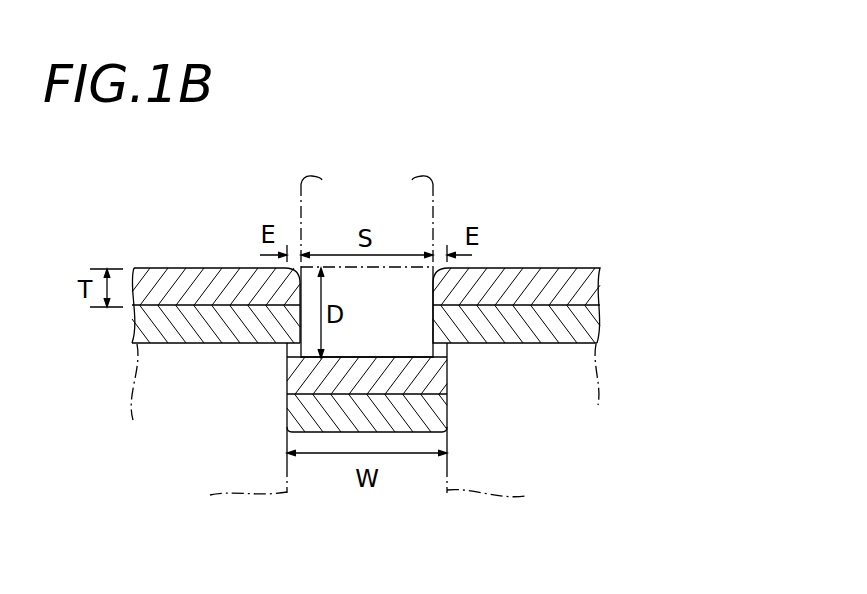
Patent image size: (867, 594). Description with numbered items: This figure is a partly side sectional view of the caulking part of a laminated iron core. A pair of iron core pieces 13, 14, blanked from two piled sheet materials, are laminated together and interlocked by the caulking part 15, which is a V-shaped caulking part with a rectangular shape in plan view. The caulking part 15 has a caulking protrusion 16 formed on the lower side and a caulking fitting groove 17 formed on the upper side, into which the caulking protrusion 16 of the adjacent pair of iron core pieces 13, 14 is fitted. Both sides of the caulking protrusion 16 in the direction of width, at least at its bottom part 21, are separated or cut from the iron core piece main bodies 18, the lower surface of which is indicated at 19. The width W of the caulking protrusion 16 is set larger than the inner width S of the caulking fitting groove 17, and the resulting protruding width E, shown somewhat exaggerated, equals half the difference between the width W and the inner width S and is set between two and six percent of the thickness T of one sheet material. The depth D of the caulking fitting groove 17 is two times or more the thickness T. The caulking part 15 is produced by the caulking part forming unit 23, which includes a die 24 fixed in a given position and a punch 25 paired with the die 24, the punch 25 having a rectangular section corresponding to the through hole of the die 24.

The iron core piece 13 is at (579, 258).
The iron core piece 14 is at (570, 358).
The caulking part 15 is at (382, 304).
The caulking protrusion 16 is at (455, 438).
The caulking fitting groove 17 is at (387, 345).
The iron core piece main body 18 is at (202, 253).
The lower surface of plate 19 is at (190, 345).
The bottom part 21 is at (287, 438).
The caulking part forming unit 23 is at (398, 168).
The die 24 is at (185, 447).
The punch 25 is at (428, 198).